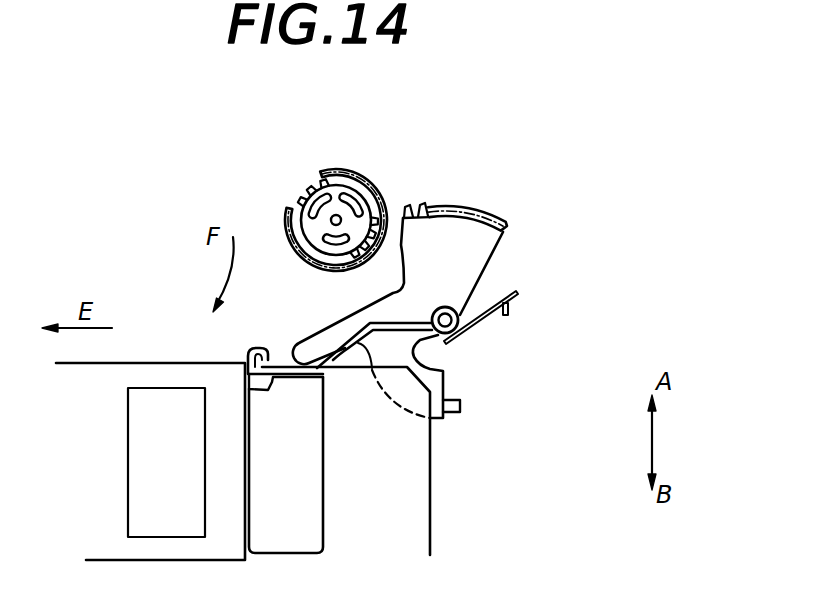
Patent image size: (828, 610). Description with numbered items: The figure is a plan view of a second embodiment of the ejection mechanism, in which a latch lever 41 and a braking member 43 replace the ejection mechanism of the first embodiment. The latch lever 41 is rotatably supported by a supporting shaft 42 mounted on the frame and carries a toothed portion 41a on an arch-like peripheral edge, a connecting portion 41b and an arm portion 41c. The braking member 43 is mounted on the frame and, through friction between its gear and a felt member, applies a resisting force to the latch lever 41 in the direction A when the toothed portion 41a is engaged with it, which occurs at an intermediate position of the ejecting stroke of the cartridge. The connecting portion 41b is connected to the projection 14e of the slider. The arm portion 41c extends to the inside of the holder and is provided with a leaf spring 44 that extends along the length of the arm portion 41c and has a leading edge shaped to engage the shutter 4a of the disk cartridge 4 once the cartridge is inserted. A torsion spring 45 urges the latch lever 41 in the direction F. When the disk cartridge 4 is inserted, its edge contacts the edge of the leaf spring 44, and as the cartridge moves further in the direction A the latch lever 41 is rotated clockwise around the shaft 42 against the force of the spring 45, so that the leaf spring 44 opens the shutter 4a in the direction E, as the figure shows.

The disk cartridge 4 is at (429, 528).
The shutter 4a is at (144, 362).
The projection 14e is at (462, 403).
The latch lever 41 is at (436, 270).
The toothed portion 41a is at (455, 207).
The connecting portion 41b is at (450, 383).
The arm portion 41c is at (333, 325).
The supporting shaft 42 is at (457, 337).
The braking member 43 is at (304, 188).
The leaf spring 44 is at (283, 367).
The torsion spring 45 is at (492, 297).